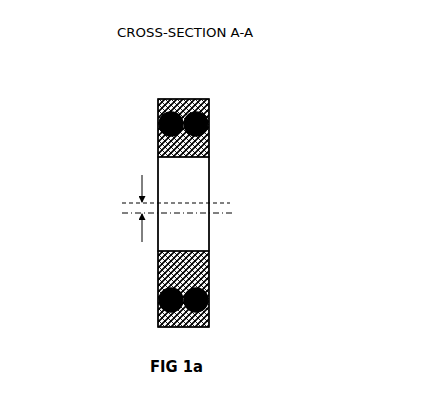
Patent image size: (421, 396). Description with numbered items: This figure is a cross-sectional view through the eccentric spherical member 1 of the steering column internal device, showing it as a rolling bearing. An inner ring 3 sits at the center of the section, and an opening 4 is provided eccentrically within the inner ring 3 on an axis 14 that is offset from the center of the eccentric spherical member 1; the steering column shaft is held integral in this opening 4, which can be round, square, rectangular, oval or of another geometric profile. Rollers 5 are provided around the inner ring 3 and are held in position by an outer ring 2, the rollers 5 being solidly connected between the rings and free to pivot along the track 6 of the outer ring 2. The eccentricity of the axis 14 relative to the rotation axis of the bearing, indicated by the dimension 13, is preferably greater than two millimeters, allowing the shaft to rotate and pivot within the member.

The eccentric spherical member 1 is at (121, 137).
The outer ring 2 is at (172, 93).
The inner ring 3 is at (218, 267).
The opening 4 is at (221, 226).
The rollers 5 is at (218, 126).
The track 6 is at (151, 305).
The gap / offset distance 13 is at (130, 208).
The axis 14 is at (231, 203).